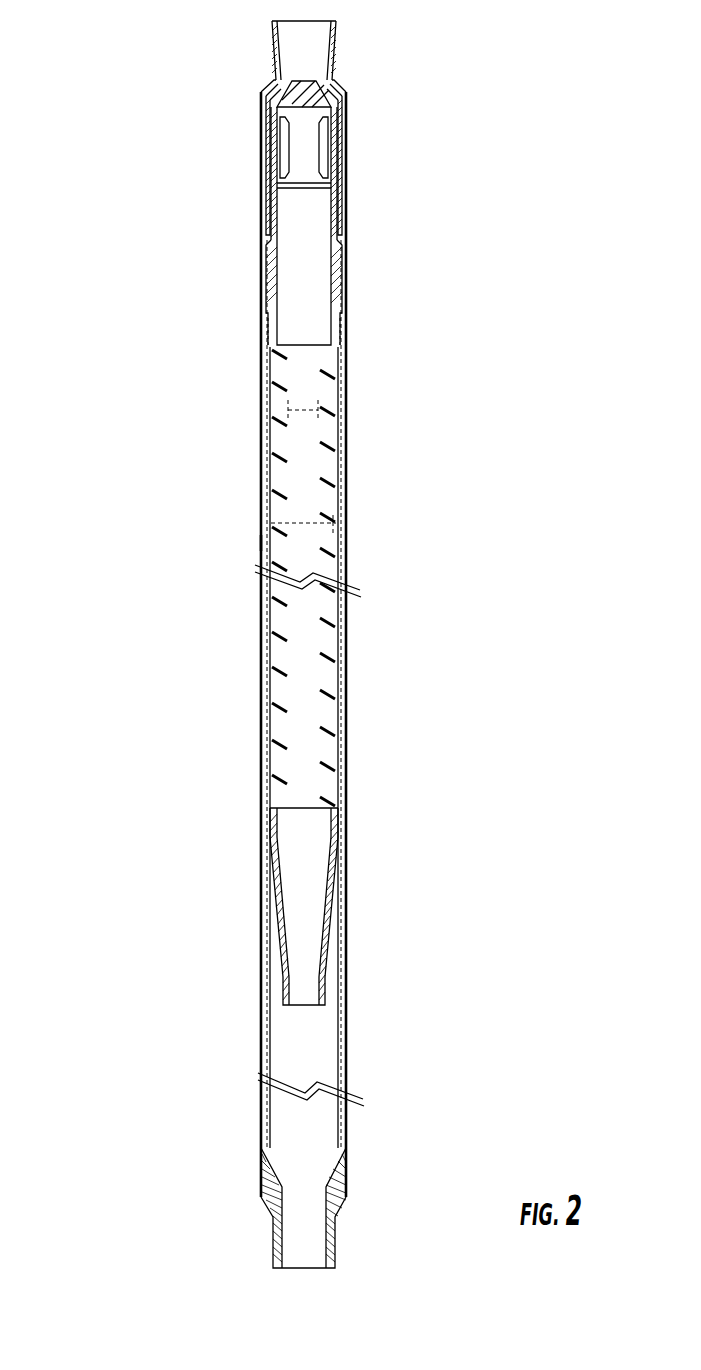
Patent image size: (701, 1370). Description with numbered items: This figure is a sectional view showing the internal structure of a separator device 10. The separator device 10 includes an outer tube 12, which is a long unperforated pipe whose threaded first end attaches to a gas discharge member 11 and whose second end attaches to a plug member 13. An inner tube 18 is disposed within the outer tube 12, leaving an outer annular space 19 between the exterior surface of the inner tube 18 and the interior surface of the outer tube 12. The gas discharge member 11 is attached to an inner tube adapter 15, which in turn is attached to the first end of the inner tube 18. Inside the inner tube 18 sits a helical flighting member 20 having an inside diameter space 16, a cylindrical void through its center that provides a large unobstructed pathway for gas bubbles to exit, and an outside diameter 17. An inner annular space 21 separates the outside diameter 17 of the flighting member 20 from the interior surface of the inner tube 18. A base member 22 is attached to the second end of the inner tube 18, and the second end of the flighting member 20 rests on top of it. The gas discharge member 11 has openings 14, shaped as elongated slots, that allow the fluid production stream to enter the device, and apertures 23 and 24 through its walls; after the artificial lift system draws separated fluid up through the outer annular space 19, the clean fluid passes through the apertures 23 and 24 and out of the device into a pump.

The separator device 10 is at (122, 406).
The gas discharge member 11 is at (262, 130).
The outer tube 12 is at (262, 750).
The plug member 13 is at (275, 1216).
The openings 14 is at (283, 142).
The inner tube adapter 15 is at (270, 283).
The inside diameter space 16 is at (307, 410).
The outside diameter 17 is at (310, 524).
The inner tube 18 is at (268, 448).
The outer annular space 19 is at (262, 543).
The flighting member 20 is at (320, 692).
The inner annular space 21 is at (332, 768).
The base member 22 is at (282, 926).
The aperture 23 is at (266, 232).
The aperture 24 is at (276, 84).